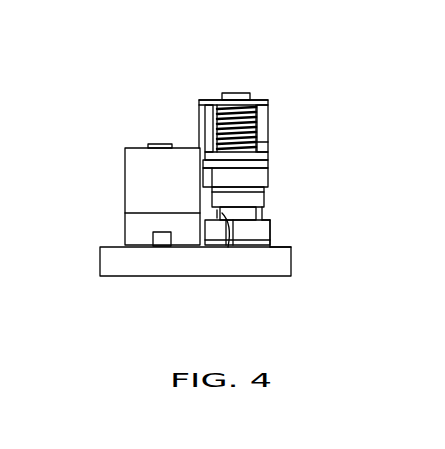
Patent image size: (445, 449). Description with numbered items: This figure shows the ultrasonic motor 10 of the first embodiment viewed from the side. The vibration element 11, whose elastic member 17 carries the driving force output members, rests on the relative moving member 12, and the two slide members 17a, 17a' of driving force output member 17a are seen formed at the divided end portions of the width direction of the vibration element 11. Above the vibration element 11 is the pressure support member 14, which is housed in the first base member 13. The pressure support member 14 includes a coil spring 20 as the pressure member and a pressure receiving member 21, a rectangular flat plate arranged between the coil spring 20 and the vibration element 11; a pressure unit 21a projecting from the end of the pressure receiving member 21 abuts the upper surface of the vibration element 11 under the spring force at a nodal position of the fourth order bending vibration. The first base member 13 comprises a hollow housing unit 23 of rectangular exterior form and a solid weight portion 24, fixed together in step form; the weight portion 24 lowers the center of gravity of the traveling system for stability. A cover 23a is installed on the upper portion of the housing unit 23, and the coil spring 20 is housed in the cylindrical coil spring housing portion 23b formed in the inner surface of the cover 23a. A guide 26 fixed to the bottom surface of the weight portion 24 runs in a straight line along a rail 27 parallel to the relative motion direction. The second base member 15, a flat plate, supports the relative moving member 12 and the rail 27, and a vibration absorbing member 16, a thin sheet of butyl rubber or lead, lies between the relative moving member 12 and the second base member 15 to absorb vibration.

The ultrasonic motor 10 is at (122, 100).
The vibration element 11 is at (274, 201).
The relative moving member 12 is at (280, 239).
The first base member 13 is at (192, 92).
The pressure support member 14 is at (280, 146).
The second base member 15 is at (118, 288).
The vibration absorbing member 16 is at (276, 250).
The elastic member 17 is at (265, 191).
The sliding member 17a is at (298, 238).
The slide member 17a' is at (228, 261).
The coil spring 20 is at (270, 103).
The pressure receiving member 21 is at (270, 170).
The pressure unit 21a is at (230, 178).
The housing unit 23 is at (199, 130).
The cover 23a is at (225, 117).
The coil spring housing portion 23b is at (229, 93).
The weight portion 24 is at (125, 162).
The guide 26 is at (131, 227).
The rail 27 is at (163, 243).